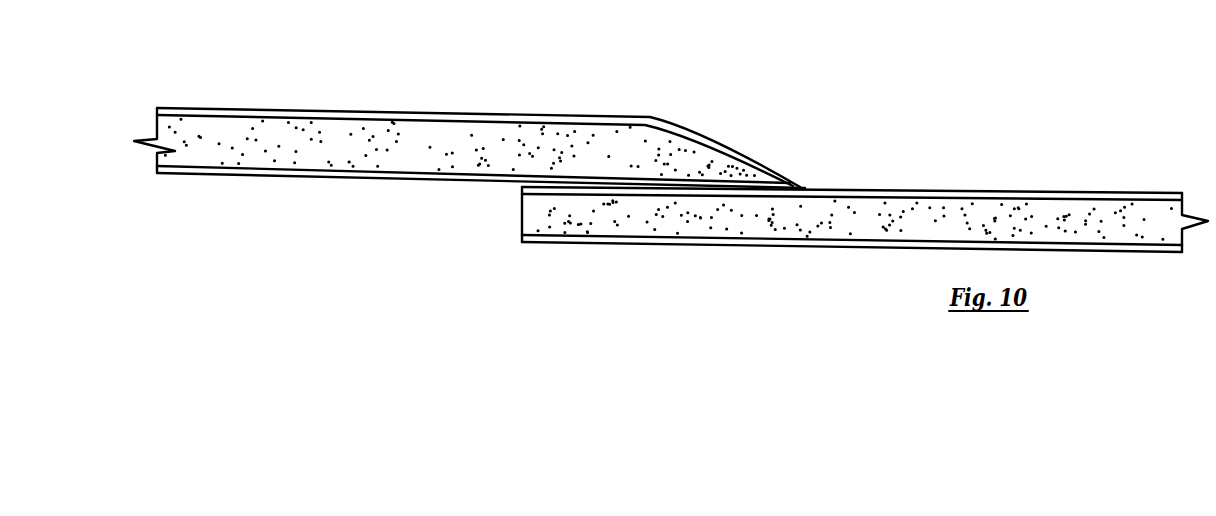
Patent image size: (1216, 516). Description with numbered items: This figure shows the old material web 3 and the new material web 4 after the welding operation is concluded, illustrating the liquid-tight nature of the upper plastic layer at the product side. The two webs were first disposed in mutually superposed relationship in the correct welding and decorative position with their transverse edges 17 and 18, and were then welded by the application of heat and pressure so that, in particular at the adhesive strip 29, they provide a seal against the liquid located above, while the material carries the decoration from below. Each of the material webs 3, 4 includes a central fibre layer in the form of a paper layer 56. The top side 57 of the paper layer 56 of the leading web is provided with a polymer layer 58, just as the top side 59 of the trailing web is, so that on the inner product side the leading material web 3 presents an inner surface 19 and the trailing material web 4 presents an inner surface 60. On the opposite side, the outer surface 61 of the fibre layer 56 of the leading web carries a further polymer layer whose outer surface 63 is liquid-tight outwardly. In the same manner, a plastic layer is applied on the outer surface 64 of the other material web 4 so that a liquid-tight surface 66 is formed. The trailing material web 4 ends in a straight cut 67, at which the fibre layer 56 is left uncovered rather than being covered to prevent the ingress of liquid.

The old material web 3 is at (228, 187).
The new material web 4 is at (1095, 177).
The transverse edge 17 is at (670, 109).
The transverse edge 18 is at (613, 257).
The inner surface 19 is at (428, 110).
The adhesive strip 29 is at (797, 175).
The paper layer 56 is at (361, 140).
The top side 57 is at (219, 121).
The polymer layer 58 is at (542, 117).
The top side 59 is at (904, 198).
The inner surface 60 is at (1015, 193).
The outer surface 61 is at (317, 170).
The outer surface 63 is at (390, 180).
The outer surface 64 is at (775, 240).
The liquid-tight surface 66 is at (708, 250).
The straight cut 67 is at (520, 211).